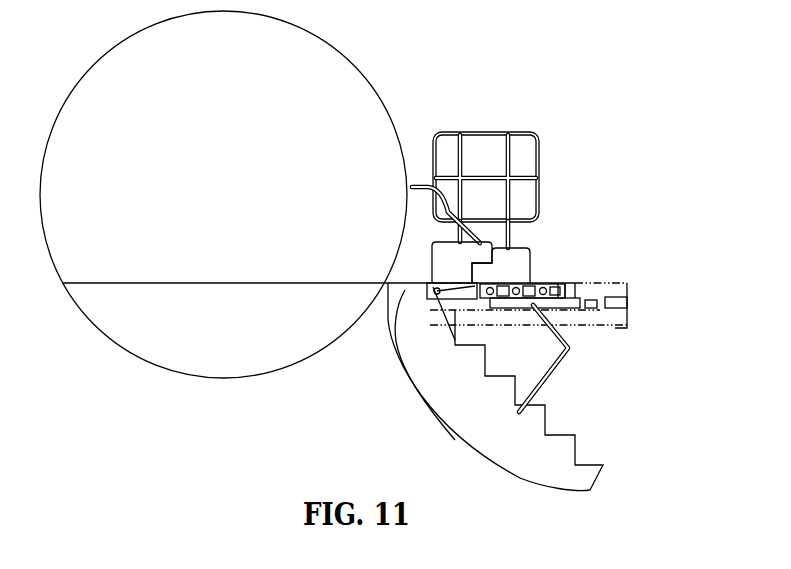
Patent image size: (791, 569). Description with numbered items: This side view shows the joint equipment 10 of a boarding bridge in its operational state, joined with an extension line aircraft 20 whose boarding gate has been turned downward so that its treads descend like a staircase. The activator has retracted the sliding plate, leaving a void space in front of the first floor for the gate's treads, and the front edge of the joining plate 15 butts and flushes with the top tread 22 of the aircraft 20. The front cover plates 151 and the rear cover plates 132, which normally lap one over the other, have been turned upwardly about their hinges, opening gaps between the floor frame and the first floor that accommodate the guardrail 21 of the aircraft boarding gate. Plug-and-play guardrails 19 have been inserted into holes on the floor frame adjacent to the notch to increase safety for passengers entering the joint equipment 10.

The joint equipment 10 is at (567, 202).
The joining plate 15 is at (427, 300).
The guardrails 19 is at (522, 157).
The extension line aircraft 20 is at (352, 77).
The guardrail of the boarding gate 21 is at (578, 347).
The top tread 22 is at (420, 293).
The rear cover plates 132 is at (510, 275).
The front cover plates 151 is at (483, 250).